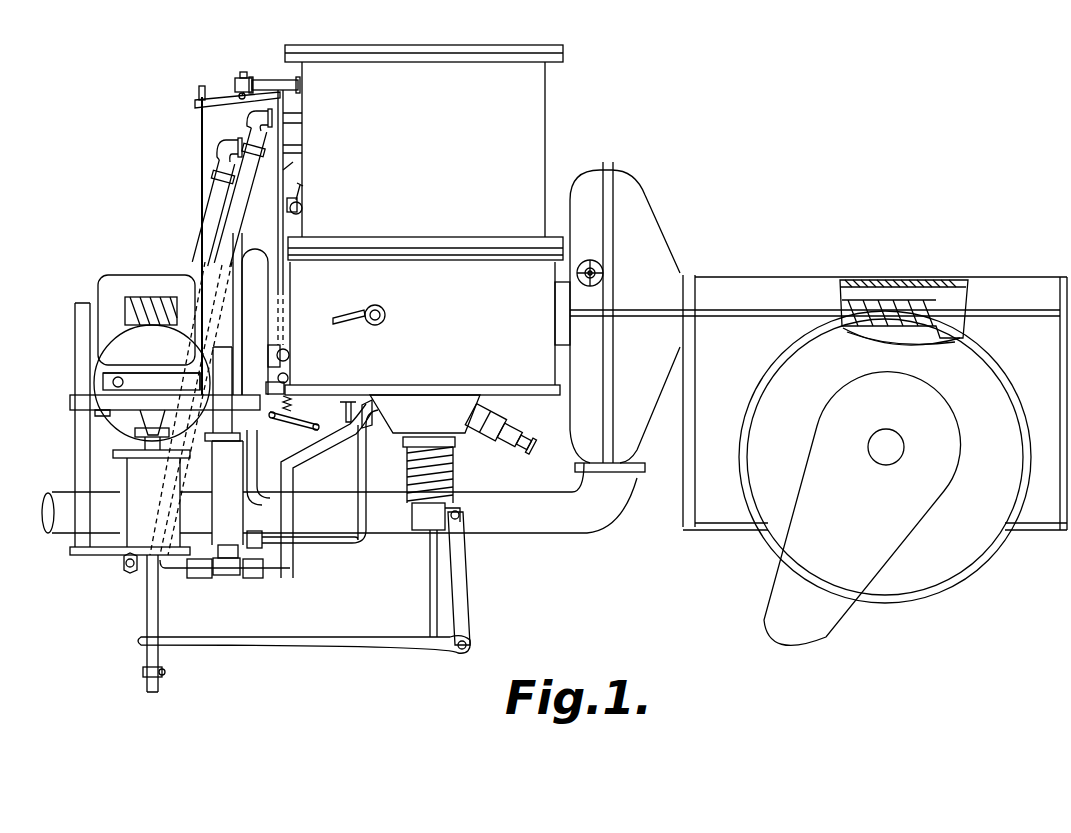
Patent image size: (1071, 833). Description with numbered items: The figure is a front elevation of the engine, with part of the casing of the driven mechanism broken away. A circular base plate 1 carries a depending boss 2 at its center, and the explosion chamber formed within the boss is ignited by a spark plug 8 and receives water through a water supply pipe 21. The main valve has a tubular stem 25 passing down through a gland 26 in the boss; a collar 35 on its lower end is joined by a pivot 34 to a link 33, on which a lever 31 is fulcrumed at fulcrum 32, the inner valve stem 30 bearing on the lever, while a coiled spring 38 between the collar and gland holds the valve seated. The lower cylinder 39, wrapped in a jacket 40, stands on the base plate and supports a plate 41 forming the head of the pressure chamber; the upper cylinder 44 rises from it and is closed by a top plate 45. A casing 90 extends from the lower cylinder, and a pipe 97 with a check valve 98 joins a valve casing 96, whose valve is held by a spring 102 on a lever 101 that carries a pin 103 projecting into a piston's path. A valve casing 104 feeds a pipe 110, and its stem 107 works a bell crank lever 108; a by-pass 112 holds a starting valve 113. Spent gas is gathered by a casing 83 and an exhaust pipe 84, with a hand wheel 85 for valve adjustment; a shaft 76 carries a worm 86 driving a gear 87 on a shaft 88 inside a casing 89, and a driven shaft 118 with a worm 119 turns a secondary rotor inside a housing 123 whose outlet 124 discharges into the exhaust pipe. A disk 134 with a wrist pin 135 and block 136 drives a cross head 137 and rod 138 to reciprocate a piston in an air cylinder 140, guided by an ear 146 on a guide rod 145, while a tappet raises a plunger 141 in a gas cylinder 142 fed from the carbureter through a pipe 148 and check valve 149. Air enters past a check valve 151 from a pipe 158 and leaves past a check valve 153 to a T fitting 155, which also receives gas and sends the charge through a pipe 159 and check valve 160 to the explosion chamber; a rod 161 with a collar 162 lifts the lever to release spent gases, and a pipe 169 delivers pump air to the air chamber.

The circular base plate 1 is at (515, 392).
The depending boss 2 is at (425, 395).
The spark plug 8 is at (515, 420).
The water supply pipe 21 is at (358, 320).
The tubular stem 25 is at (407, 475).
The gland 26 is at (438, 437).
The stem 30 is at (430, 568).
The lever 31 is at (385, 647).
The fulcrum 32 is at (470, 645).
The link 33 is at (468, 585).
The pivot 34 is at (462, 515).
The collar 35 is at (418, 530).
The coiled spring 38 is at (455, 470).
The lower cylinder 39 is at (505, 250).
The jacket 40 is at (422, 328).
The plate 41 is at (440, 248).
The upper cylinder 44 is at (423, 149).
The top plate 45 is at (565, 50).
The shaft 76 is at (952, 280).
The casing 83 is at (625, 316).
The exhaust pipe 84 is at (605, 522).
The hand wheel 85 is at (603, 270).
The worm 86 is at (878, 300).
The gear 87 is at (958, 336).
The shaft 88 is at (904, 447).
The casing 89 is at (875, 402).
The casing 90 is at (288, 300).
The valve casing 96 is at (290, 395).
The pipe 97 is at (289, 376).
The check valve 98 is at (287, 352).
The lever 101 is at (287, 455).
The spring 102 is at (295, 420).
The pin 103 is at (380, 410).
The valve casing 104 is at (300, 80).
The stem 107 is at (247, 78).
The bell crank lever 108 is at (235, 85).
The pipe 110 is at (284, 145).
The by-pass 112 is at (285, 175).
The starting valve 113 is at (300, 198).
The driven shaft 118 is at (108, 275).
The worm 119 is at (160, 297).
The housing 123 is at (262, 250).
The outlet 124 is at (250, 470).
The disk 134 is at (152, 383).
The wrist pin 135 is at (149, 358).
The block 136 is at (108, 372).
The cross head 137 is at (103, 383).
The rod 138 is at (148, 420).
The air cylinder 140 is at (212, 380).
The plunger 141 is at (223, 410).
The gas cylinder 142 is at (225, 512).
The guide rod 145 is at (80, 303).
The ear 146 is at (80, 402).
The pipe 148 is at (364, 524).
The check valve 149 is at (262, 540).
The check valve 151 is at (122, 563).
The check valve 153 is at (198, 578).
The T fitting 155 is at (228, 575).
The pipe 158 is at (240, 175).
The pipe 159 is at (290, 560).
The check valve 160 is at (255, 578).
The rod 161 is at (145, 658).
The collar 162 is at (163, 676).
The pipe 169 is at (210, 200).